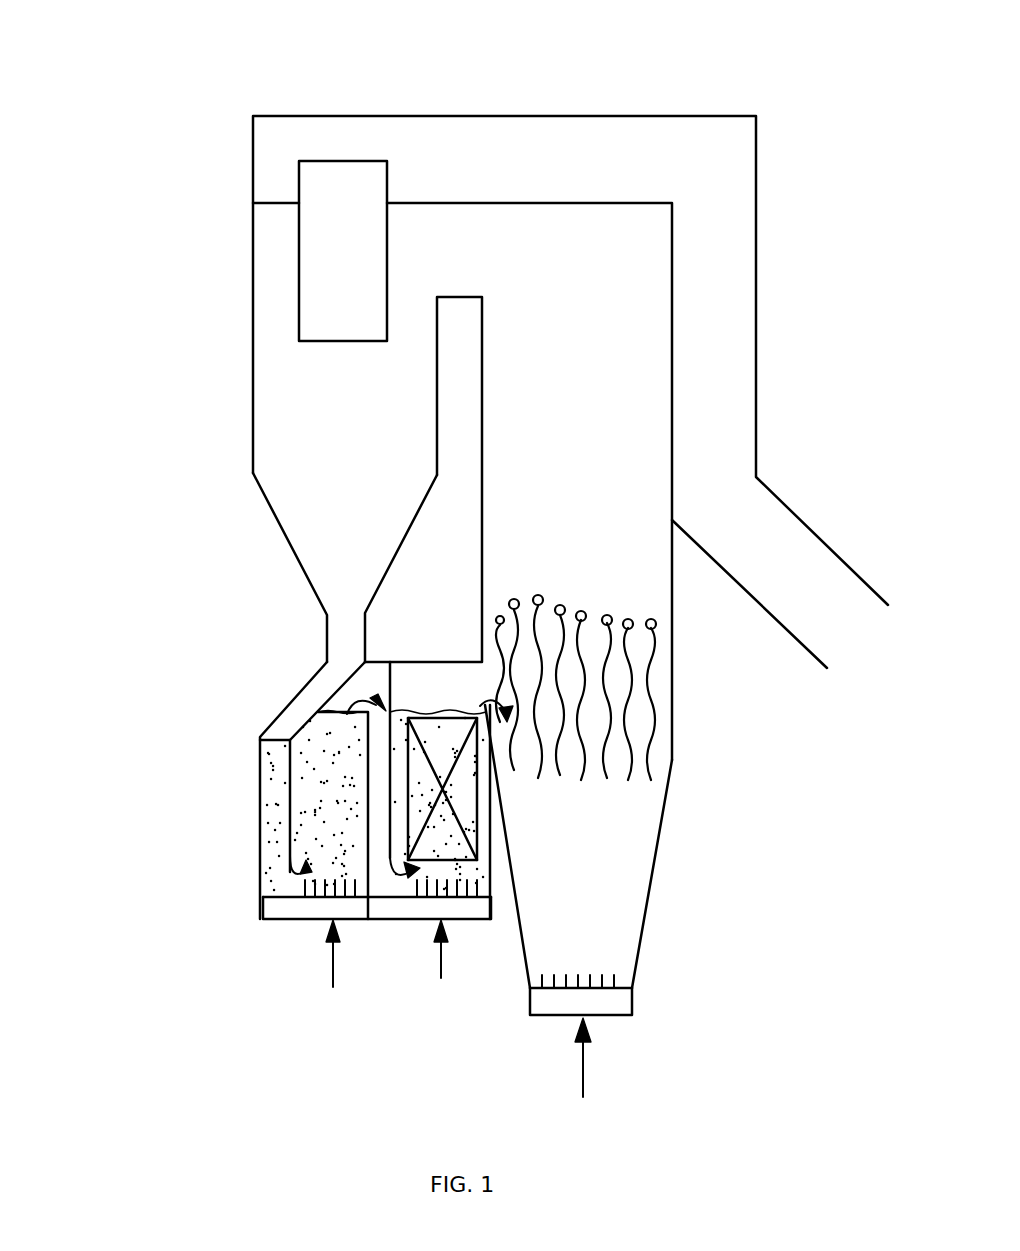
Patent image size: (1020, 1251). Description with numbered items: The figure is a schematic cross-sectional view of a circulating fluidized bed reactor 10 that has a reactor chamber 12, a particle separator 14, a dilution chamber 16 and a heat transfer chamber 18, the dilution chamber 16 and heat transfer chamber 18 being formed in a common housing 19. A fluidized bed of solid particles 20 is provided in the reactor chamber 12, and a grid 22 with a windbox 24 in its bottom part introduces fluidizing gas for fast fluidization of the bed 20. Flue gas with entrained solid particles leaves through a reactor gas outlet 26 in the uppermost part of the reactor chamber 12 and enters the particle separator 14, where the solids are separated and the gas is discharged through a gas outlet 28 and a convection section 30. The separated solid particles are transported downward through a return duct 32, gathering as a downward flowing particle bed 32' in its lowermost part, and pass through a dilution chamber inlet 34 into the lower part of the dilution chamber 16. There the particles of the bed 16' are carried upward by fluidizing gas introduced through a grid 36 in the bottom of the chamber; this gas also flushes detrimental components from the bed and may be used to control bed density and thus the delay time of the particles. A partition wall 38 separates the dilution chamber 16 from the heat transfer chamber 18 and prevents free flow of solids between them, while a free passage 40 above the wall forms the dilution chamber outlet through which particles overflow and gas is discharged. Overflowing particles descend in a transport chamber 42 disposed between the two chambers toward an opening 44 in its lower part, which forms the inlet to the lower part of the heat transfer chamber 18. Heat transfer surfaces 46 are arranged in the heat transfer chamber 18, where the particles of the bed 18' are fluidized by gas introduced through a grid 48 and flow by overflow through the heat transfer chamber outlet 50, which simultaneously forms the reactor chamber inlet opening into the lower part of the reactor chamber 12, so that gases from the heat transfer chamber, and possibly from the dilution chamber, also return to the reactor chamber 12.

The circulating fluidized bed reactor 10 is at (778, 92).
The reactor chamber 12 is at (583, 787).
The particle separator 14 is at (352, 450).
The dilution chamber 16 is at (331, 815).
The bed of solid particles 16' is at (237, 815).
The heat transfer chamber 18 is at (438, 803).
The bed 18' is at (521, 812).
The common housing 19 is at (225, 796).
The fluidized bed of solid particles 20 is at (607, 843).
The grid 22 is at (600, 985).
The windbox 24 is at (620, 1002).
The reactor gas outlet 26 is at (465, 252).
The gas outlet 28 is at (333, 270).
The convection section 30 is at (727, 252).
The return duct 32 is at (264, 748).
The downward flowing particle bed 32' is at (243, 767).
The dilution chamber inlet 34 is at (300, 884).
The grid 36 is at (290, 903).
The partition wall 38 is at (357, 737).
The free passage 40 is at (372, 682).
The transport chamber 42 is at (383, 740).
The opening 44 is at (398, 882).
The heat transfer surfaces 46 is at (460, 832).
The grid 48 is at (465, 897).
The heat transfer chamber outlet 50 is at (495, 645).